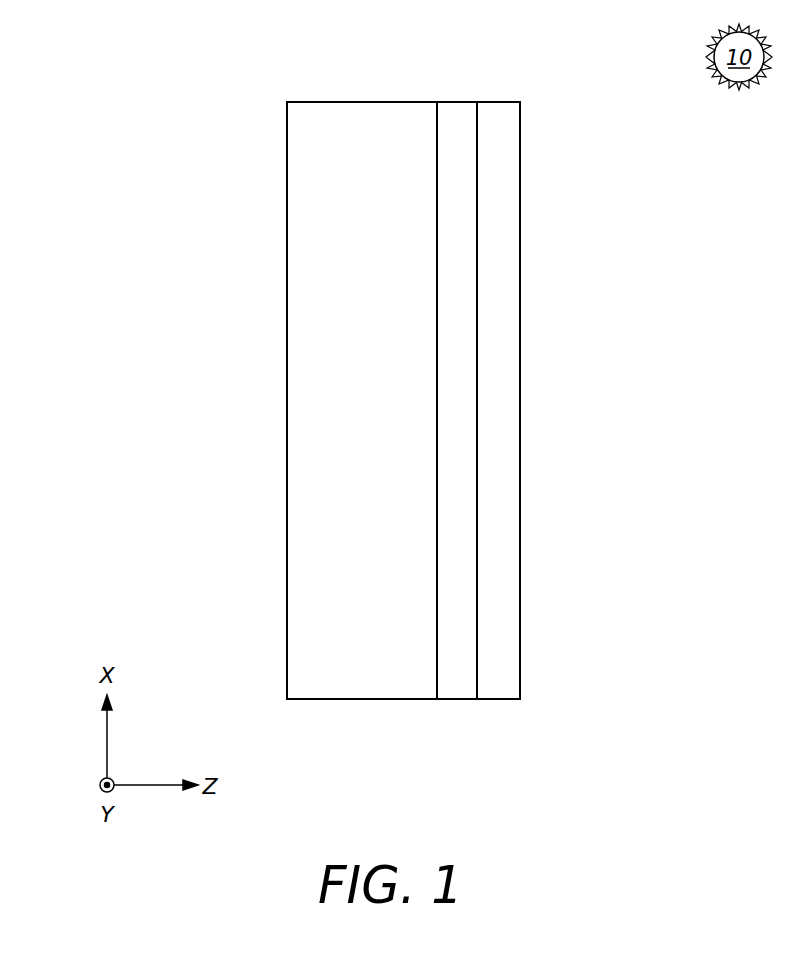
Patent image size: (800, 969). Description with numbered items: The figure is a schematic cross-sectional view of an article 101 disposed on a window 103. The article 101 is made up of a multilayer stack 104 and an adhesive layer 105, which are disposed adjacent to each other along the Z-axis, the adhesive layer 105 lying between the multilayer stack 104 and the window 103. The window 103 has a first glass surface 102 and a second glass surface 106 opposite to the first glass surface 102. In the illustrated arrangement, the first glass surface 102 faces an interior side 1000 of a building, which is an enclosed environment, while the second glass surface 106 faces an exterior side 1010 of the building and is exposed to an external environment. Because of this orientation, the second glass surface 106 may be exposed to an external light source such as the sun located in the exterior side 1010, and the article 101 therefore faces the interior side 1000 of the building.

The article 101 is at (479, 87).
The first glass surface 102 is at (477, 303).
The window 103 is at (505, 320).
The multilayer stack 104 is at (368, 675).
The adhesive layer 105 is at (463, 677).
The second glass surface 106 is at (521, 165).
The interior side 1000 is at (256, 469).
The exterior side 1010 is at (546, 445).